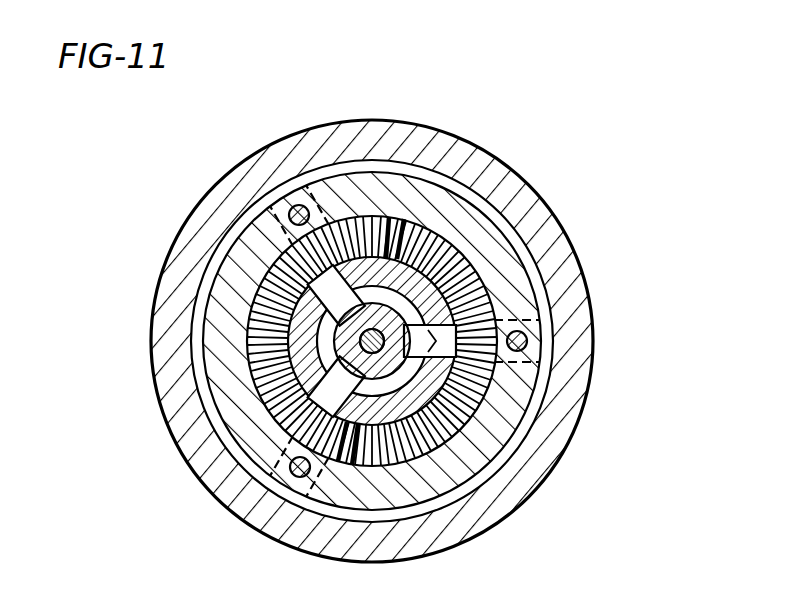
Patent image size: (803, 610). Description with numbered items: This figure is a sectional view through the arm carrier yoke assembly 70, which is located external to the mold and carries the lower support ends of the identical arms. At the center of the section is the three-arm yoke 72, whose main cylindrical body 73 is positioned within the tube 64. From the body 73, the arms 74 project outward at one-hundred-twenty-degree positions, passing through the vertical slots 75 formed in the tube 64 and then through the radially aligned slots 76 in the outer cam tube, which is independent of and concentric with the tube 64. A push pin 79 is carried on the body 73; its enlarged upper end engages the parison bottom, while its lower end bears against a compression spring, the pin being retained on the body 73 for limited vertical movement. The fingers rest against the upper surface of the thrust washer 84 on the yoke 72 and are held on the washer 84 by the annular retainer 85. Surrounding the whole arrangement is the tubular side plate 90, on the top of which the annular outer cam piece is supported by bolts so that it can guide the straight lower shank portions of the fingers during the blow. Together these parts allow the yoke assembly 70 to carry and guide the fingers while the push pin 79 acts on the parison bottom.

The tubular side plate 90 is at (594, 369).
The arm carrier yoke assembly 70 is at (518, 231).
The arms 74 is at (473, 241).
The annular retainer 85 is at (400, 185).
The three-arm yoke 72 is at (475, 462).
The push pin 79 is at (268, 298).
The main cylindrical body 73 is at (292, 347).
The tube 64 is at (250, 346).
The radially aligned slots 76 is at (256, 452).
The thrust washer 84 is at (258, 365).
The vertical slots 75 is at (295, 266).